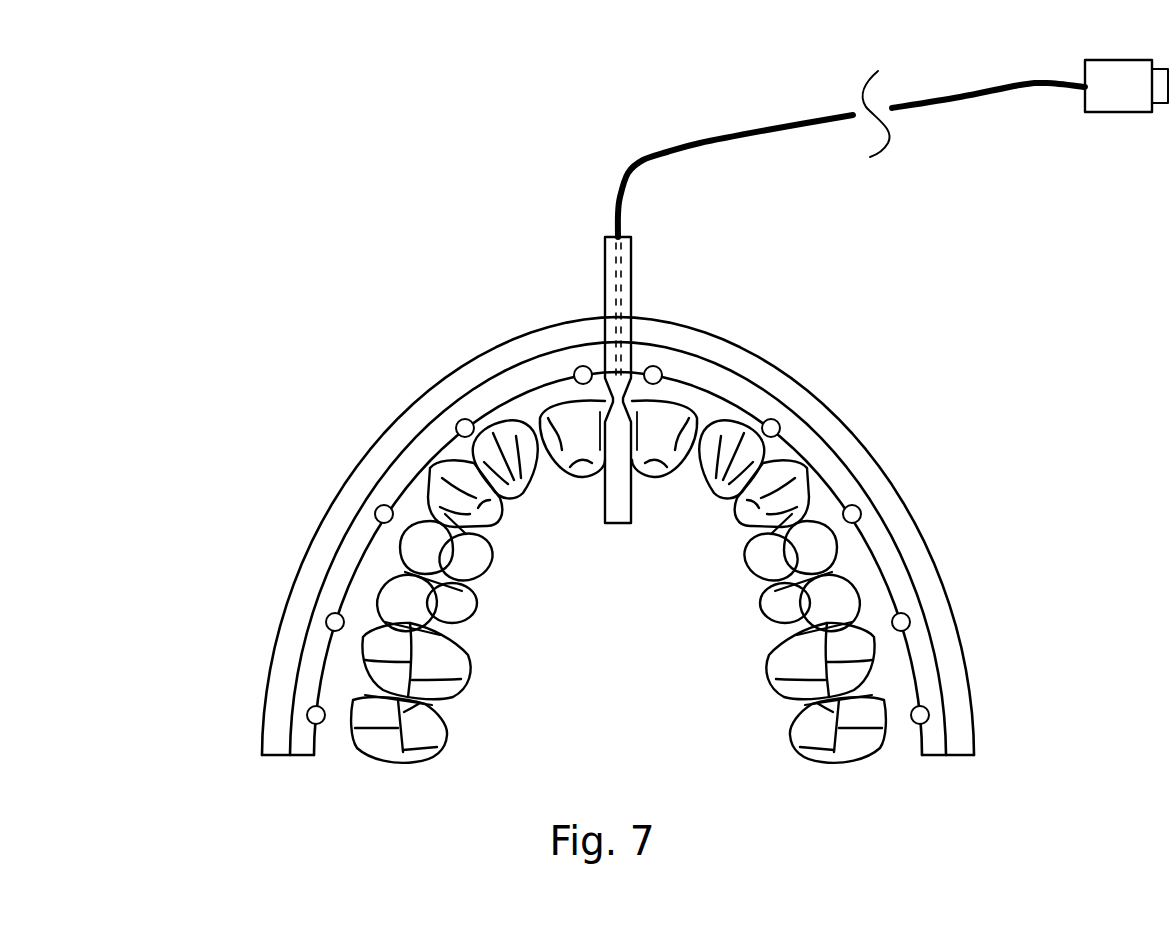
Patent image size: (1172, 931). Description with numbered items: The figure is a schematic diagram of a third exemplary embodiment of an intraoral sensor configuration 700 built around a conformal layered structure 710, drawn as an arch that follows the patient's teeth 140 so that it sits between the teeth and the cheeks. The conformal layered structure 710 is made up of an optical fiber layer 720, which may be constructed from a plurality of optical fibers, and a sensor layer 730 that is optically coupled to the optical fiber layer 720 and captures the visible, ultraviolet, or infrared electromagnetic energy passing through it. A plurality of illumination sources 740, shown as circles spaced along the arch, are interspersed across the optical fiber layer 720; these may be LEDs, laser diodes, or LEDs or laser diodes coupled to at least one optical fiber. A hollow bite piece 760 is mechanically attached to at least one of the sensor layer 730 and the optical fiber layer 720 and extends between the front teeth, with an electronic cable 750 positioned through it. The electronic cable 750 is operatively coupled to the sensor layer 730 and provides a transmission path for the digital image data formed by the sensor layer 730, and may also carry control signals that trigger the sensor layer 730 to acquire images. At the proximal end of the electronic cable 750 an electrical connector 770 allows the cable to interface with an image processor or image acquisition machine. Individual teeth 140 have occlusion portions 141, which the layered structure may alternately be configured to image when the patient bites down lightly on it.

The intraoral sensor configuration 700 is at (685, 449).
The conformal layered structure 710 is at (617, 578).
The optical fiber layer 720 is at (293, 757).
The sensor layer 730 is at (272, 757).
The illumination sources 740 is at (460, 419).
The electronic cable 750 is at (697, 143).
The hollow bite piece 760 is at (602, 288).
The electrical connector 770 is at (1093, 108).
The teeth 140 is at (618, 631).
The occlusion portions 141 is at (563, 446).